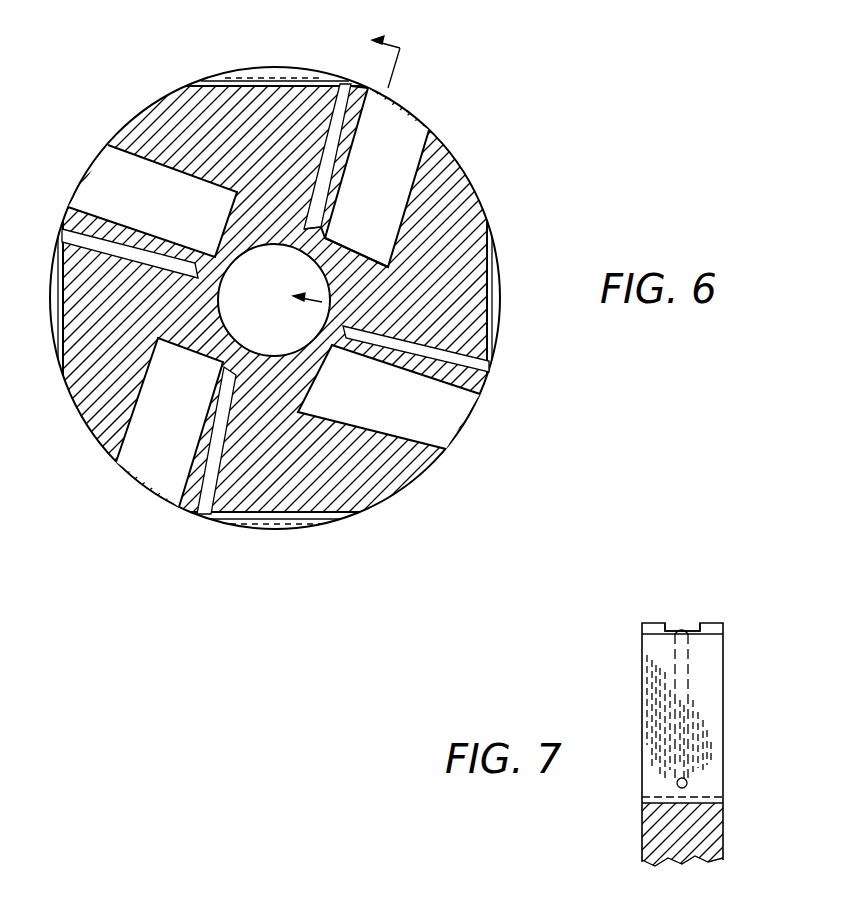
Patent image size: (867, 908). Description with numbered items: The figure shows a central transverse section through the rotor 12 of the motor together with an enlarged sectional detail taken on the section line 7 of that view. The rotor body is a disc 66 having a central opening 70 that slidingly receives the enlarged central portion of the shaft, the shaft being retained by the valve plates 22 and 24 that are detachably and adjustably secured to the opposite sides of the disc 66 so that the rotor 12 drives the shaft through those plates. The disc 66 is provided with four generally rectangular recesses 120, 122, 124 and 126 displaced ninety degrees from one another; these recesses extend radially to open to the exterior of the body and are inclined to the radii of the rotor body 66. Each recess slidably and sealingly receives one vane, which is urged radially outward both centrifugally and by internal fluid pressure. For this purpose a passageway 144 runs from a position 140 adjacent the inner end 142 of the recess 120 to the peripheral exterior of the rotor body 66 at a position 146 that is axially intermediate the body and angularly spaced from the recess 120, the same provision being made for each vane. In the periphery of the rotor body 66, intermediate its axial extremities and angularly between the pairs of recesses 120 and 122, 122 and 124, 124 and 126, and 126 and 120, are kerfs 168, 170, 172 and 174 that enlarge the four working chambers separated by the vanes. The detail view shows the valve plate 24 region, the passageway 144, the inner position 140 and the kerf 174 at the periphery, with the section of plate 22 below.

In FIG. 6, the rotor 12 is at (143, 100).
In FIG. 6, the rotor body 66 is at (447, 174).
In FIG. 6, the central opening 70 is at (238, 272).
In FIG. 6, the recess 120 is at (427, 147).
In FIG. 7, the recess 120 is at (710, 748).
In FIG. 6, the recess 122 is at (414, 442).
In FIG. 6, the recess 124 is at (118, 445).
In FIG. 6, the recess 126 is at (85, 205).
In FIG. 6, the position adjacent inner end of recess 140 is at (333, 228).
In FIG. 7, the position adjacent inner end of recess 140 is at (676, 785).
In FIG. 6, the inner end of recess 142 is at (386, 268).
In FIG. 6, the passageway 144 is at (328, 174).
In FIG. 7, the passageway 144 is at (695, 738).
In FIG. 6, the position on peripheral exterior 146 is at (346, 86).
In FIG. 6, the kerf 168 is at (490, 257).
In FIG. 6, the kerf 170 is at (272, 524).
In FIG. 6, the kerf 172 is at (62, 294).
In FIG. 6, the kerf 174 is at (279, 82).
In FIG. 7, the kerf 174 is at (678, 628).
In FIG. 6, the section line 7- 7 is at (338, 169).
In FIG. 7, the valve plate 22 is at (682, 864).
In FIG. 7, the valve plate 24 is at (720, 845).